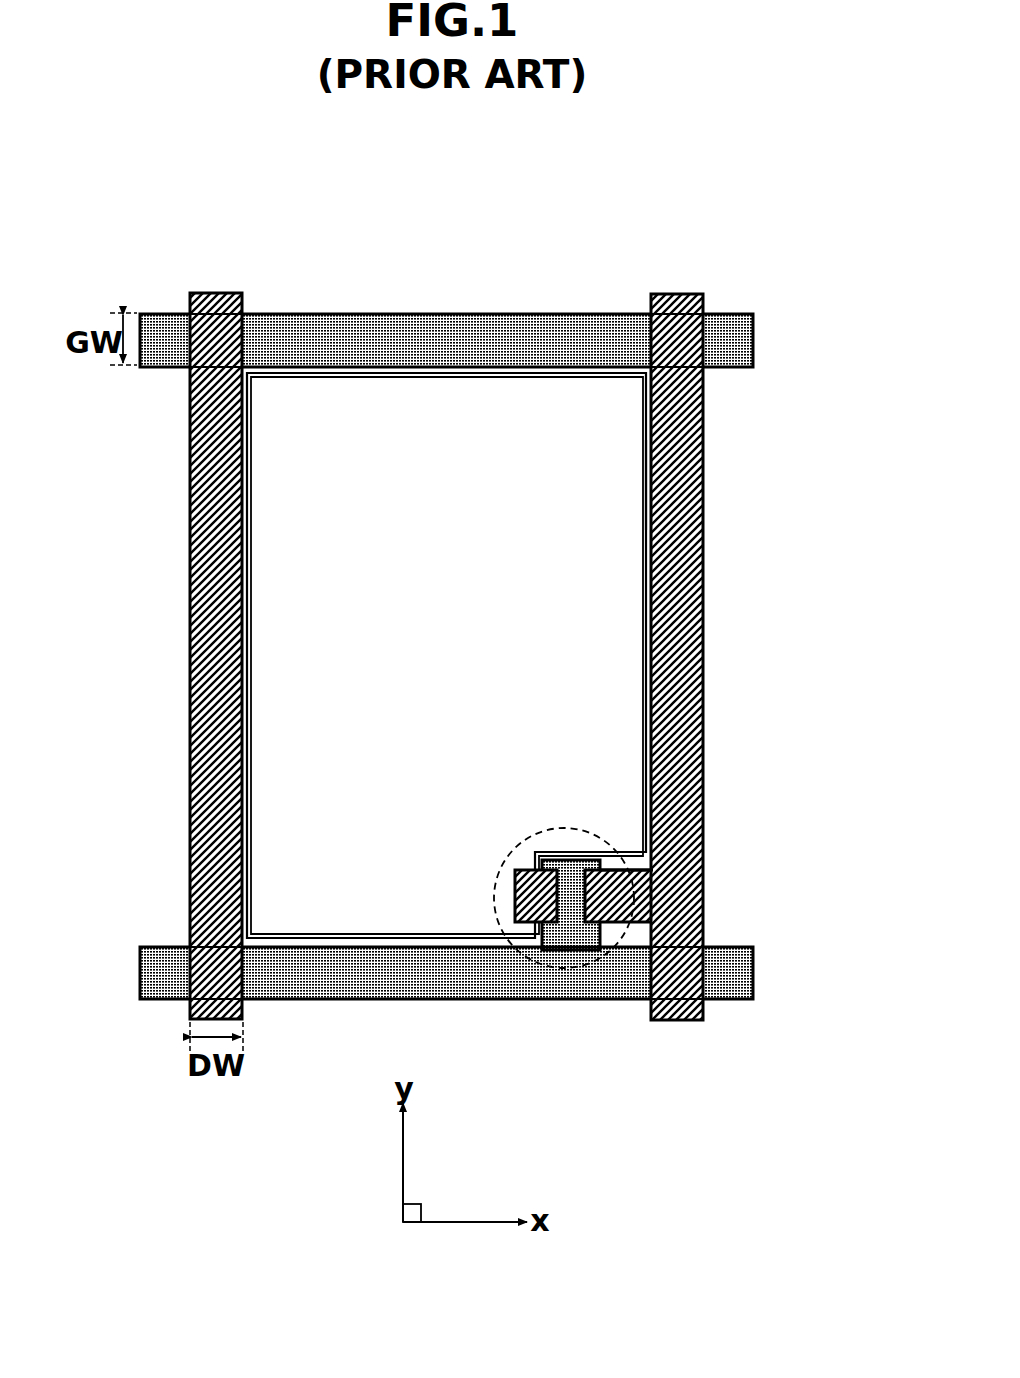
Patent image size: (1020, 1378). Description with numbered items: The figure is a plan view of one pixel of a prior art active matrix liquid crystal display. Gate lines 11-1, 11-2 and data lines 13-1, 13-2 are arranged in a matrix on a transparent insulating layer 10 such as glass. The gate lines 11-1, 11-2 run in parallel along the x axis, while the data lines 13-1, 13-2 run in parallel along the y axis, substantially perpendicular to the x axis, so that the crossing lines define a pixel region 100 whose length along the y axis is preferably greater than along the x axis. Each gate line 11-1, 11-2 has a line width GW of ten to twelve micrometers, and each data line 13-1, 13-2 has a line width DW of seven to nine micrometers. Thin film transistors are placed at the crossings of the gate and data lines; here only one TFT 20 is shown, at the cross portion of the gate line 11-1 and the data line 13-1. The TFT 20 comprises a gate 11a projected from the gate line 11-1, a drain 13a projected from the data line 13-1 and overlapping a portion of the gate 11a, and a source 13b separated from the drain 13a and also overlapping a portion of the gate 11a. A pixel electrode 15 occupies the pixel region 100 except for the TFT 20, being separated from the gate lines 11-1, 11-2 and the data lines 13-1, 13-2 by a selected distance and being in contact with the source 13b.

The transparent insulating layer 10 is at (472, 214).
The pixel region 100 is at (360, 372).
The pixel electrode 15 is at (628, 573).
The gate line 11-1 is at (741, 975).
The gate line 11-2 is at (741, 340).
The data line 13-1 is at (696, 765).
The data line 13-2 is at (195, 728).
The gate 11a is at (571, 905).
The drain 13a is at (623, 890).
The source 13b is at (527, 902).
The TFT 20 is at (650, 483).